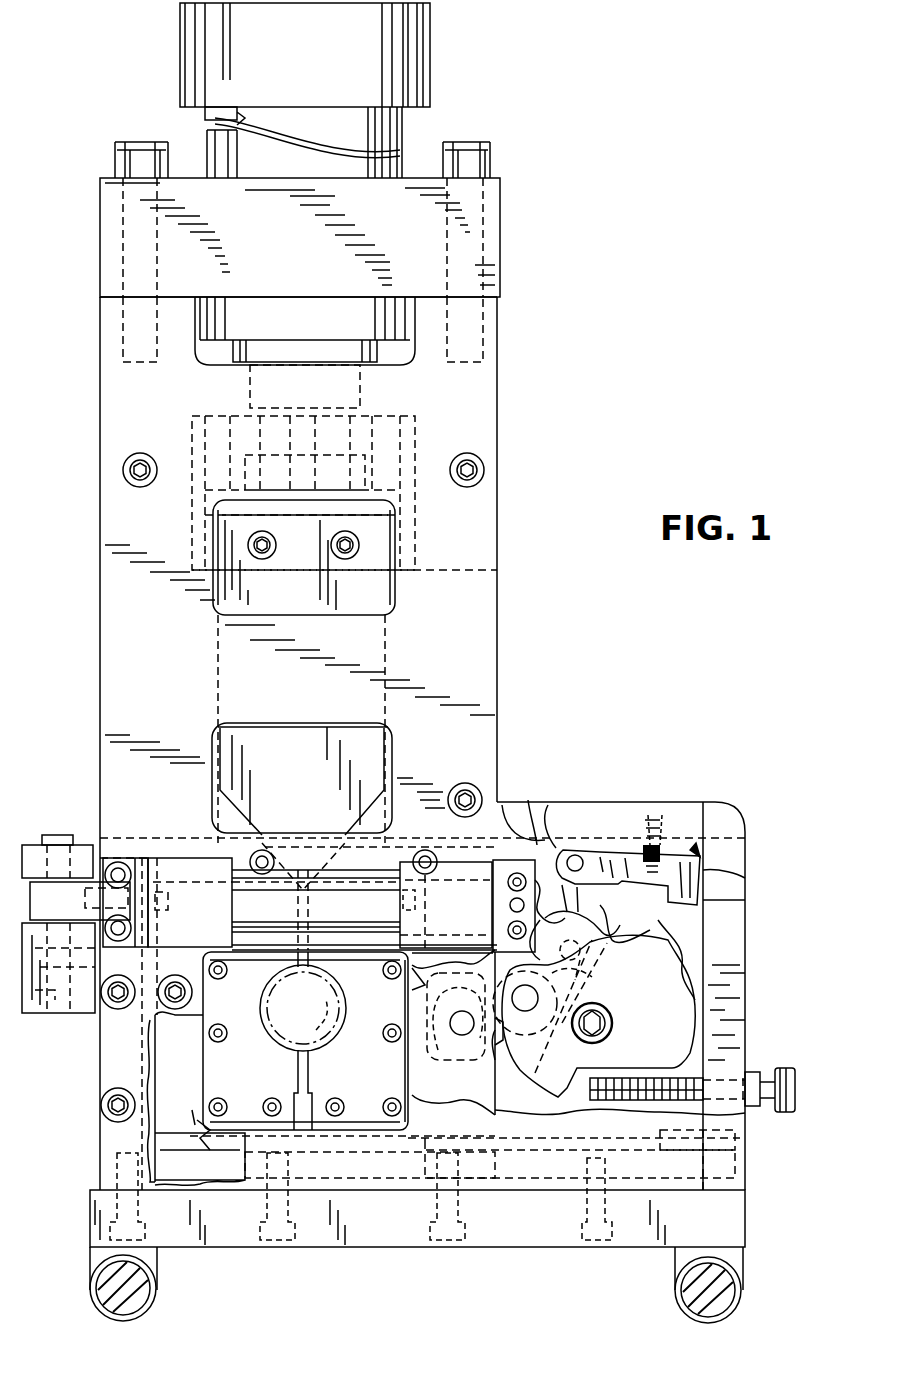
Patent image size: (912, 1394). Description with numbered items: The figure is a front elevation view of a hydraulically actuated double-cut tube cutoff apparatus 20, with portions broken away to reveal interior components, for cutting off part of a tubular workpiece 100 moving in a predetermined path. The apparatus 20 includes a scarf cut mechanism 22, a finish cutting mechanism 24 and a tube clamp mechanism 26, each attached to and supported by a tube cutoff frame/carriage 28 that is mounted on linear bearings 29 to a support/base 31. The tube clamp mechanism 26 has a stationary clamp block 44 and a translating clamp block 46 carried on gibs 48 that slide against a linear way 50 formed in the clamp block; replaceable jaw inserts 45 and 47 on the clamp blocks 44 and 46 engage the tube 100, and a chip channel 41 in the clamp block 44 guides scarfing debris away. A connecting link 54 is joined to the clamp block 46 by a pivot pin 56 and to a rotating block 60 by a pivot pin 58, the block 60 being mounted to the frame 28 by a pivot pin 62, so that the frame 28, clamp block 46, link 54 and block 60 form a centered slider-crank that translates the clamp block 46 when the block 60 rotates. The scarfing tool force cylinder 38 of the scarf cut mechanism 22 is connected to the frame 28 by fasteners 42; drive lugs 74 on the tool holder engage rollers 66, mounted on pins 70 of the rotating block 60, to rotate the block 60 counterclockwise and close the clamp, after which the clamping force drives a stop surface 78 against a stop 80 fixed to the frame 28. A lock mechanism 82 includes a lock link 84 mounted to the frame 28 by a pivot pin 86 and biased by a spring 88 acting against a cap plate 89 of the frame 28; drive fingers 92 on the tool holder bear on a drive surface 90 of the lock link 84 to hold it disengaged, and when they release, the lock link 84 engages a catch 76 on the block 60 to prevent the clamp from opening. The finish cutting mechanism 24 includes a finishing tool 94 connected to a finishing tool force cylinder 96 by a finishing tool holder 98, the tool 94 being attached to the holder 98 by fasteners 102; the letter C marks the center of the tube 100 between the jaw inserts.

The double-cut tube cutoff apparatus 20 is at (627, 268).
The scarf cut mechanism 22 is at (122, 840).
The finish cutting mechanism 24 is at (432, 533).
The tube clamp mechanism 26 is at (522, 1093).
The tube cutoff frame/carriage 28 is at (503, 713).
The linear bearings 29 is at (92, 1300).
The support/base 31 is at (150, 1283).
The scarfing tool force cylinder 38 is at (368, 920).
The chip channel 41 is at (200, 1040).
The fasteners 42 is at (530, 795).
The stationary clamp block 44 is at (195, 1080).
The jaw insert 45 is at (272, 1083).
The translating clamp block 46 is at (462, 1100).
The jaw insert 47 is at (362, 1083).
The gibs 48 is at (180, 1145).
The linear way 50 is at (110, 1128).
The connecting link 54 is at (467, 1064).
The pivot pin 56 is at (463, 1035).
The pivot pin 58 is at (493, 958).
The rotating block 60 is at (670, 1023).
The pivot pin 62 is at (605, 1033).
The rollers 66 is at (592, 953).
The pins 70 is at (590, 960).
The drive lugs 74 is at (620, 925).
The catch 76 is at (703, 958).
The stop surface 78 is at (572, 1100).
The stop 80 is at (693, 1103).
The lock mechanism 82 is at (705, 850).
The lock link 84 is at (708, 870).
The pivot pin 86 is at (565, 848).
The spring 88 is at (668, 840).
The cap plate 89 is at (548, 808).
The drive surface 90 is at (617, 882).
The drive fingers 92 is at (703, 898).
The finishing tool 94 is at (318, 785).
The finishing tool force cylinder 96 is at (400, 152).
The finishing tool holder 98 is at (492, 573).
The tubular workpiece 100 is at (303, 1008).
The fasteners 102 is at (278, 552).
The center axis C is at (295, 968).